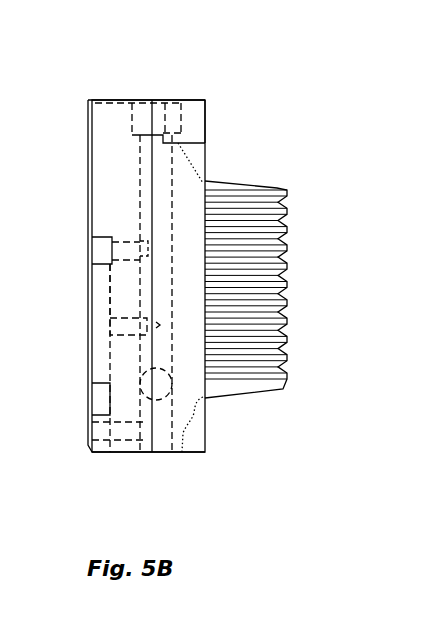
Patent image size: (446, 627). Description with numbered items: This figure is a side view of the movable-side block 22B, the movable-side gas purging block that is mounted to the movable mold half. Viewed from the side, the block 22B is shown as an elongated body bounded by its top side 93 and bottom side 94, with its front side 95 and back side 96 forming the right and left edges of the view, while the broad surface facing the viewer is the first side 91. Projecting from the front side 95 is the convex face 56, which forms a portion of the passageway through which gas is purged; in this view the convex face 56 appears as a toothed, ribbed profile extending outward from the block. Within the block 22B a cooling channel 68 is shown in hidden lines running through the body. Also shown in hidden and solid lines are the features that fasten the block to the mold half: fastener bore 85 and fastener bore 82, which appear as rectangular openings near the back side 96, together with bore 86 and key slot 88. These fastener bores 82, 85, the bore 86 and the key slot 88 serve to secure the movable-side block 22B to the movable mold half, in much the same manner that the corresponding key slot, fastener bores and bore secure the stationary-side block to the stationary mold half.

The convex face 56 is at (300, 213).
The movable-side block 22B is at (193, 110).
The cooling channel 68 is at (149, 135).
The fastener bore 82 is at (115, 429).
The fastener bore 85 is at (130, 252).
The bore 86 is at (133, 327).
The key slot 88 is at (102, 287).
The first side 91 is at (113, 179).
The top side 93 is at (117, 100).
The bottom side 94 is at (128, 453).
The front side 95 is at (205, 132).
The back side 96 is at (88, 122).